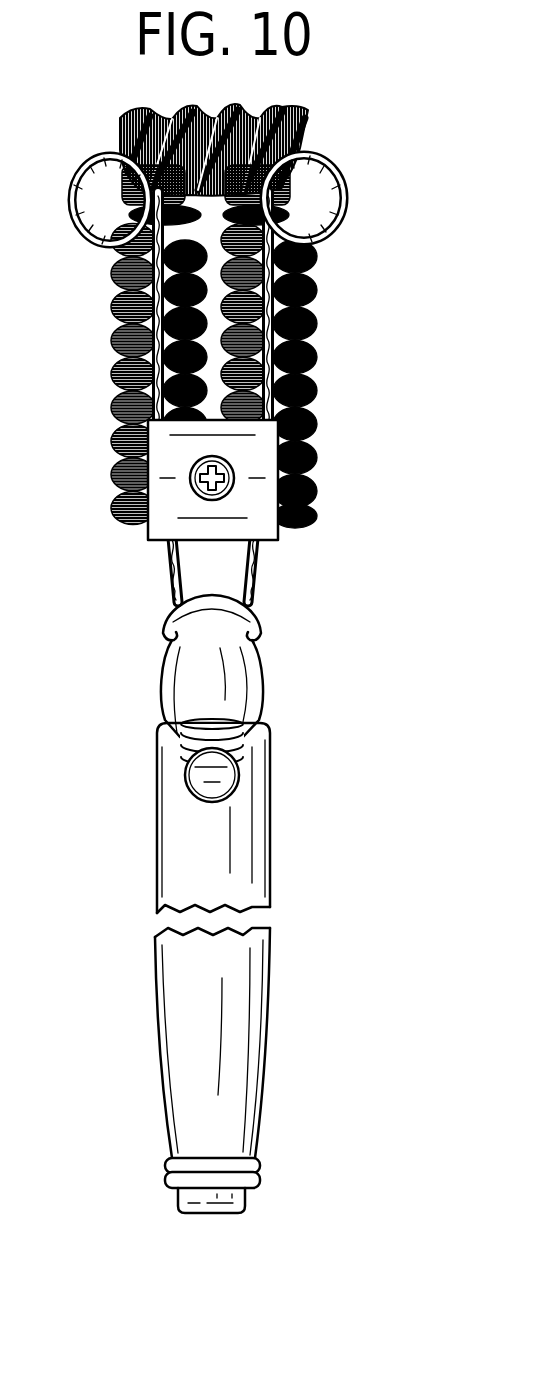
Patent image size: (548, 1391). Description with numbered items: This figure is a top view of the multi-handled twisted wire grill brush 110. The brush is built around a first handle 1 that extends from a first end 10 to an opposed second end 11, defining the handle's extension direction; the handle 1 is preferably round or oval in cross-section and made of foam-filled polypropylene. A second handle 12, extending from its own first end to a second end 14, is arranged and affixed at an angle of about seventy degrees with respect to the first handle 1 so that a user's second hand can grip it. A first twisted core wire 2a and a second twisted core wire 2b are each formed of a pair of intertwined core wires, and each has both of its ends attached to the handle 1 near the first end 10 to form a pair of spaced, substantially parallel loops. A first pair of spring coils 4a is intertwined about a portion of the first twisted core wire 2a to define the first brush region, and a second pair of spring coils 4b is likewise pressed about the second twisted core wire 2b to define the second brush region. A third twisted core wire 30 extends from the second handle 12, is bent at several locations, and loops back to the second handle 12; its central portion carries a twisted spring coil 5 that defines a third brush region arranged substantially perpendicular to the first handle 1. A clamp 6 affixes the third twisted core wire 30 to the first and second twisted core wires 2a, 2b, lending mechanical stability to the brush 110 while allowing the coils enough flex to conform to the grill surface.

The multi-handled twisted wire grill brush 110 is at (450, 147).
The twisted spring coil 5 is at (183, 113).
The first twisted core wire 2a is at (108, 236).
The second twisted core wire 2b is at (304, 208).
The first pair of spring coils 4a is at (111, 382).
The second pair of spring coils 4b is at (317, 352).
The third twisted core wire 30 is at (112, 287).
The clamp 6 is at (263, 447).
The second handle 12 is at (158, 678).
The first end 10 is at (160, 723).
The second end 14 is at (195, 778).
The handle 1 is at (270, 760).
The second end 11 is at (233, 1212).